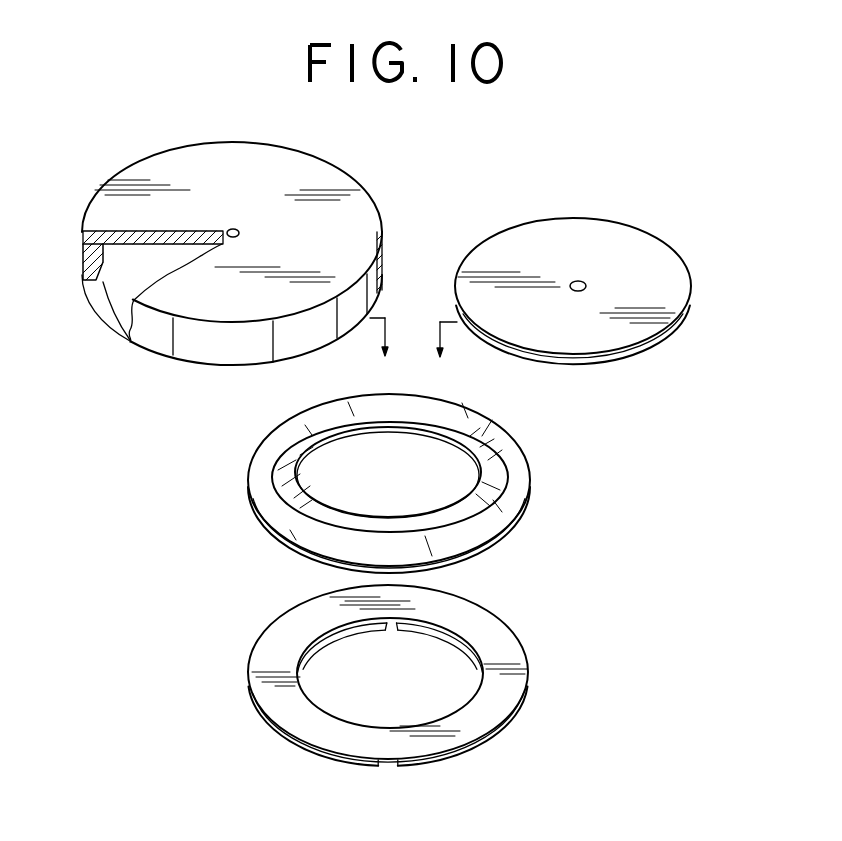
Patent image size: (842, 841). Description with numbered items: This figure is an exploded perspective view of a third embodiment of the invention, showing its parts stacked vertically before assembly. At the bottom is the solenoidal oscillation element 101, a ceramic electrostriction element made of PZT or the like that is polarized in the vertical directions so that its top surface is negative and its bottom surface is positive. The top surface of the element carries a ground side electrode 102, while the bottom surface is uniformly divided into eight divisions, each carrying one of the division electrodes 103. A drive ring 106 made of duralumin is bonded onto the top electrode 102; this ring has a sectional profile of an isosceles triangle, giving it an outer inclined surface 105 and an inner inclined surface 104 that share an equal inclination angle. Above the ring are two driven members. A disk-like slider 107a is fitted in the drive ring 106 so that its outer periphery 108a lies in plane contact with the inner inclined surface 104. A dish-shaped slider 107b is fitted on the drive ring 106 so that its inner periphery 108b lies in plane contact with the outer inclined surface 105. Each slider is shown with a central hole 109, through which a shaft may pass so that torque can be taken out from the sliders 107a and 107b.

The solenoidal oscillation element 101 is at (426, 703).
The ground side electrode 102 is at (510, 645).
The division electrodes 103 is at (407, 633).
The inner inclined surface 104 is at (490, 431).
The outer inclined surface 105 is at (274, 472).
The drive ring 106 is at (400, 483).
The disk-like slider 107a is at (573, 285).
The dish-shaped slider 107b is at (221, 224).
The outer periphery 108a is at (617, 358).
The inner periphery 108b is at (103, 262).
The central hole 109 is at (236, 230).